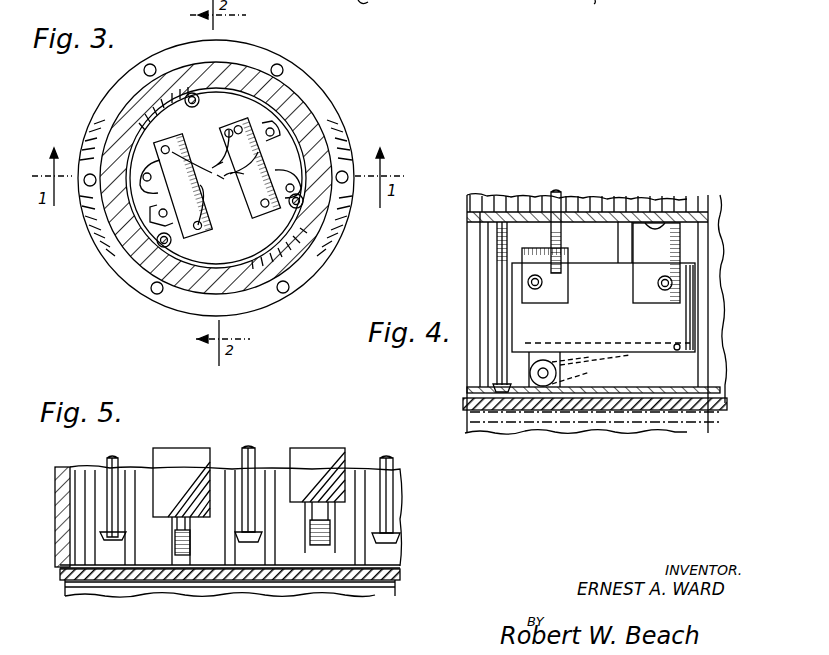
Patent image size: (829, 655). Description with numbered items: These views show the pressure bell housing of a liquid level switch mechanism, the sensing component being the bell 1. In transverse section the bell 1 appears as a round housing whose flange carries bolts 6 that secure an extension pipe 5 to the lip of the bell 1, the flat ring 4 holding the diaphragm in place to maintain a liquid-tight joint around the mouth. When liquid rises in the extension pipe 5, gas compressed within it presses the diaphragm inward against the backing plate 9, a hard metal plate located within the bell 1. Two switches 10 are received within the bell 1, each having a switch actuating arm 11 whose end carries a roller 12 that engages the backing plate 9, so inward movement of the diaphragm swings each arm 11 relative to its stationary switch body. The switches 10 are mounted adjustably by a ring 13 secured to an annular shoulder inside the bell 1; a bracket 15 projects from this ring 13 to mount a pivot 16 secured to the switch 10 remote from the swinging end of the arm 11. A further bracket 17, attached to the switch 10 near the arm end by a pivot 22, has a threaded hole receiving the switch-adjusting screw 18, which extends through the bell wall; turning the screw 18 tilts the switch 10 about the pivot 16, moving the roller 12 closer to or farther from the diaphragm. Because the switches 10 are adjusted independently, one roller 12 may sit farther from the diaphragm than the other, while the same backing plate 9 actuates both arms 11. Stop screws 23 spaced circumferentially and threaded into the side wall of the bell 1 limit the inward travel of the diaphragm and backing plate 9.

In FIG. 3, the bell 1 is at (296, 108).
In FIG. 4, the bell 1 is at (715, 262).
In FIG. 5, the bell 1 is at (58, 480).
In FIG. 4, the flat ring 4 is at (732, 413).
In FIG. 5, the flat ring 4 is at (400, 576).
In FIG. 4, the extension pipe 5 is at (590, 433).
In FIG. 5, the extension pipe 5 is at (305, 595).
In FIG. 3, the bolts 6 is at (283, 66).
In FIG. 3, the backing plate 9 is at (212, 144).
In FIG. 4, the backing plate 9 is at (725, 393).
In FIG. 5, the backing plate 9 is at (280, 566).
In FIG. 3, the switch 10 is at (190, 190).
In FIG. 4, the switch 10 is at (606, 313).
In FIG. 5, the switch 10 is at (180, 460).
In FIG. 4, the switch actuating arm 11 is at (537, 369).
In FIG. 5, the switch actuating arm 11 is at (173, 530).
In FIG. 4, the roller 12 is at (591, 369).
In FIG. 5, the roller 12 is at (192, 545).
In FIG. 4, the ring 13 is at (700, 198).
In FIG. 3, the bracket 15 is at (264, 122).
In FIG. 4, the bracket 15 is at (660, 262).
In FIG. 4, the pivot 16 is at (663, 292).
In FIG. 3, the bracket 17 is at (154, 162).
In FIG. 4, the bracket 17 is at (548, 292).
In FIG. 3, the switch-adjusting screw 18 is at (300, 150).
In FIG. 4, the switch-adjusting screw 18 is at (560, 193).
In FIG. 4, the pivot 22 is at (535, 295).
In FIG. 3, the stop screws 23 is at (192, 93).
In FIG. 4, the stop screws 23 is at (497, 278).
In FIG. 5, the stop screws 23 is at (112, 458).